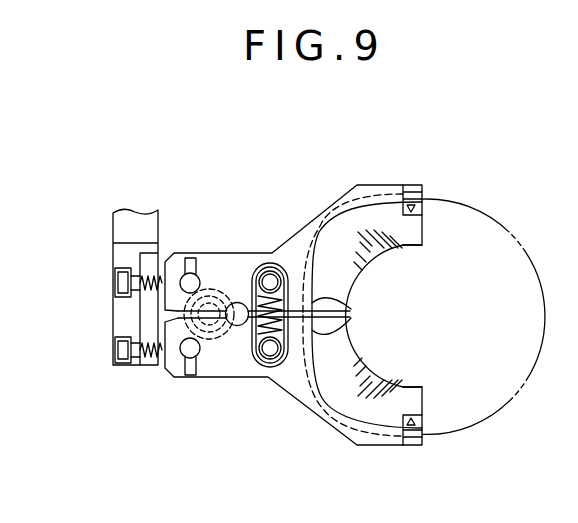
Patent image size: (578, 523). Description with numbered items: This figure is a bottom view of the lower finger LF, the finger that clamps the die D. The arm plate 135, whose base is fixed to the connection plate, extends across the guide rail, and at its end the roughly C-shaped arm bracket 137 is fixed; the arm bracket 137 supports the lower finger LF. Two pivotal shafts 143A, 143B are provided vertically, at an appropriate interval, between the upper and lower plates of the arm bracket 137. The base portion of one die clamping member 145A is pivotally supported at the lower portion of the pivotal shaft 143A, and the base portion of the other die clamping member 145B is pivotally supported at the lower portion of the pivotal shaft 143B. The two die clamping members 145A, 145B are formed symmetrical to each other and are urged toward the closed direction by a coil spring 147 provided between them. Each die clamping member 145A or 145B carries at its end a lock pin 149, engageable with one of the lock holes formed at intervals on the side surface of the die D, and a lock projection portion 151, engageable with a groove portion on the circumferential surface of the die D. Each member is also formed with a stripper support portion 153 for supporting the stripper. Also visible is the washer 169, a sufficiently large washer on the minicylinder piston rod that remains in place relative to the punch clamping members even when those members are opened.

The lower finger LF is at (345, 180).
The arm plate 135 is at (120, 232).
The arm bracket 137 is at (152, 365).
The pivotal shaft 143A is at (195, 278).
The pivotal shaft 143B is at (196, 355).
The die clamping member 145A is at (302, 236).
The die clamping member 145B is at (306, 393).
The coil spring 147 is at (250, 285).
The lock pin 149 is at (422, 218).
The lock projection portion 151 is at (352, 314).
The stripper support portion 153 is at (408, 246).
The washer 169 is at (216, 325).
The die D is at (538, 386).